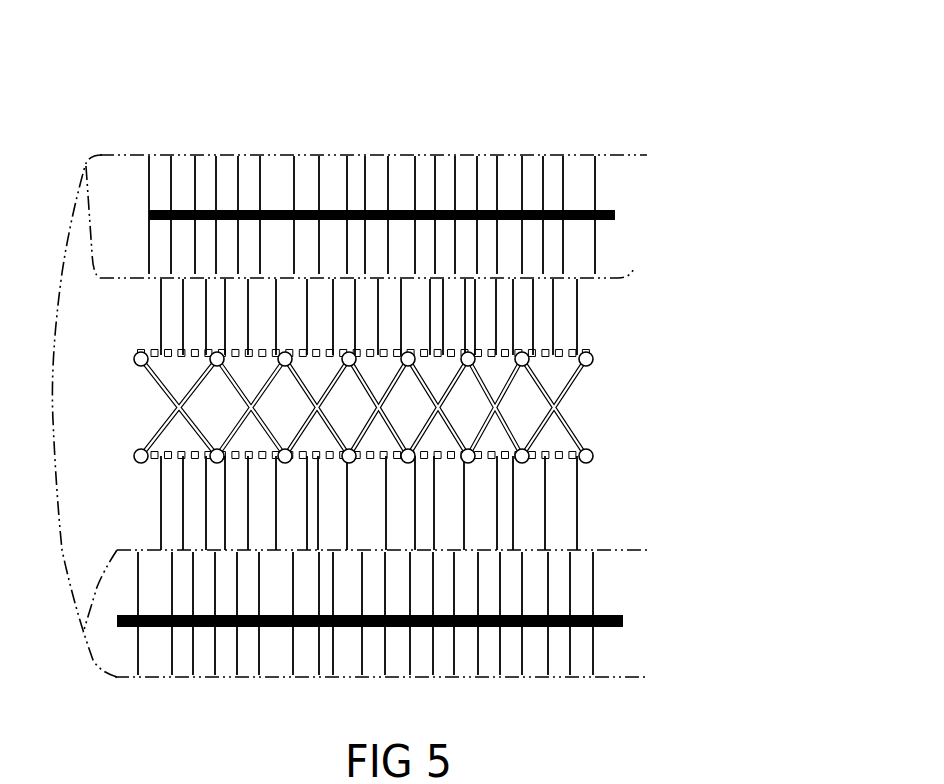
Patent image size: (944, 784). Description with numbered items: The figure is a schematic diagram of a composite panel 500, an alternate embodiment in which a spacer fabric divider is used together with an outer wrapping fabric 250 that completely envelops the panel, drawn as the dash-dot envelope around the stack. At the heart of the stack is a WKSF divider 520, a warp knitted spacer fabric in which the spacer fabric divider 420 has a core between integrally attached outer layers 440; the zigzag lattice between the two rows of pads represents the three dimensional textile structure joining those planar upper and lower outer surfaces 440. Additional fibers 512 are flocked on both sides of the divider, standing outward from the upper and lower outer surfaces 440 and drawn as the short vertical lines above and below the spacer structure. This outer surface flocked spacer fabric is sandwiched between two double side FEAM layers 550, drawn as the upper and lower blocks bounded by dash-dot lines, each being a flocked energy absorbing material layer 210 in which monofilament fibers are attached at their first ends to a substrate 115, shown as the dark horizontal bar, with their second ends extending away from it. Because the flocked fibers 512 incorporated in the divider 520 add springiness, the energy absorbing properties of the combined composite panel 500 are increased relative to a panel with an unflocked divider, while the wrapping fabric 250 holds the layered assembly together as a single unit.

The composite panel 500 is at (398, 108).
The FEAM layer 210 is at (600, 155).
The double side FEAM layer 550 is at (630, 278).
The additional fibers 512 is at (588, 323).
The outer layers 440 is at (590, 355).
The spacer fabric divider 420 is at (600, 342).
The WKSF divider 520 is at (508, 417).
The substrate 115 is at (628, 621).
The outer wrapping fabric 250 is at (93, 652).